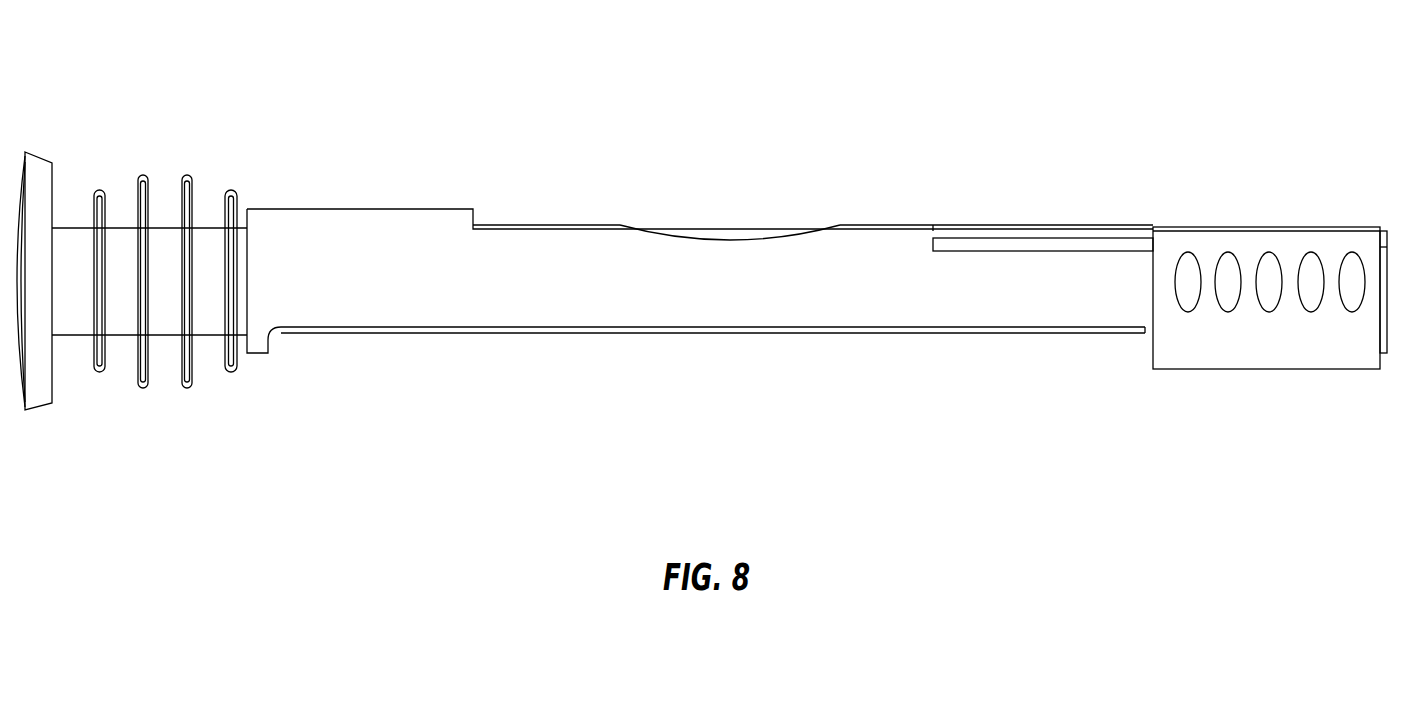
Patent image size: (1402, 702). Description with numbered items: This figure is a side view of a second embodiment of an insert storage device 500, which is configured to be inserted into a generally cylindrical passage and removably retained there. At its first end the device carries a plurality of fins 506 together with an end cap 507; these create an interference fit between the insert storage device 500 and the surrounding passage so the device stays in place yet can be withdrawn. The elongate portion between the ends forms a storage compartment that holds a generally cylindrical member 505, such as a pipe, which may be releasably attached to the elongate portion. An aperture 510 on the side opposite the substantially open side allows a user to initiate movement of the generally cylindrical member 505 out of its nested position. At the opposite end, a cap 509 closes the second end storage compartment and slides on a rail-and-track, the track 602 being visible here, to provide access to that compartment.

The insert storage device 500 is at (92, 80).
The generally cylindrical member 505 is at (716, 230).
The fins 506 is at (103, 368).
The end cap 507 is at (40, 373).
The cap 509 is at (1244, 233).
The aperture 510 is at (776, 228).
The track 602 is at (998, 245).